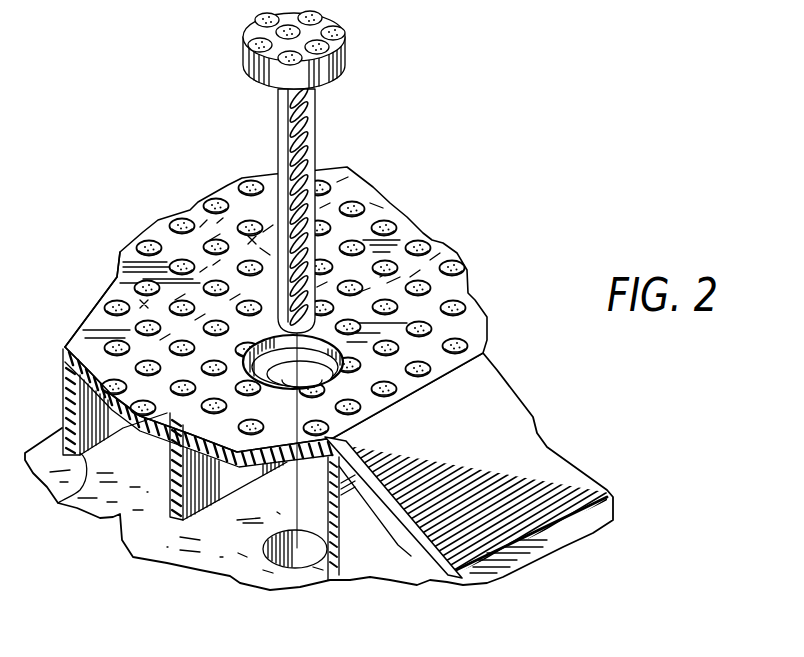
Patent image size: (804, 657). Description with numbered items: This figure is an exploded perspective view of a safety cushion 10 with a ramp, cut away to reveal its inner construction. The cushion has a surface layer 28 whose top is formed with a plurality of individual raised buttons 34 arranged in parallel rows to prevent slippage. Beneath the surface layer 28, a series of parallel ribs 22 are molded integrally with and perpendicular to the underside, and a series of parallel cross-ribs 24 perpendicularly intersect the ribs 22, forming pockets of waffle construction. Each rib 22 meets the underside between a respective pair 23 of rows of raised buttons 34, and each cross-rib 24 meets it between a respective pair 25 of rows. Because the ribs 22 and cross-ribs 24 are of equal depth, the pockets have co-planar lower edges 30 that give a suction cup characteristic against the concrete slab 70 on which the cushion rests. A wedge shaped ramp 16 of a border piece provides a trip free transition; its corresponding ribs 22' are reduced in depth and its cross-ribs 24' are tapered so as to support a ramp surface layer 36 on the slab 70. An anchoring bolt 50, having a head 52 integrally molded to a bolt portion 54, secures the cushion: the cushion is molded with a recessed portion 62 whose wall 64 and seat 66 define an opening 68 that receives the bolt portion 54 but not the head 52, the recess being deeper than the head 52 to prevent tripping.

The safety cushion 10 is at (130, 220).
The wedge shaped ramp 16 is at (543, 452).
The ribs 22 is at (144, 434).
The ribs of the ramp 22' is at (369, 536).
The pair of parallel rows of raised buttons 23 is at (378, 210).
The cross-ribs 24 is at (260, 486).
The cross-ribs of the ramp 24' is at (393, 527).
The pair of parallel rows of raised buttons 25 is at (122, 280).
The surface layer 28 is at (63, 365).
The co-planar lower edges 30 is at (60, 503).
The raised buttons 34 is at (425, 238).
The ramp surface layer 36 is at (490, 373).
The anchoring bolt 50 is at (366, 34).
The head 52 is at (247, 61).
The bolt portion 54 is at (305, 104).
The recessed portion 62 is at (340, 317).
The wall 64 is at (312, 150).
The seat 66 is at (305, 391).
The opening 68 is at (378, 413).
The concrete slab 70 is at (110, 517).